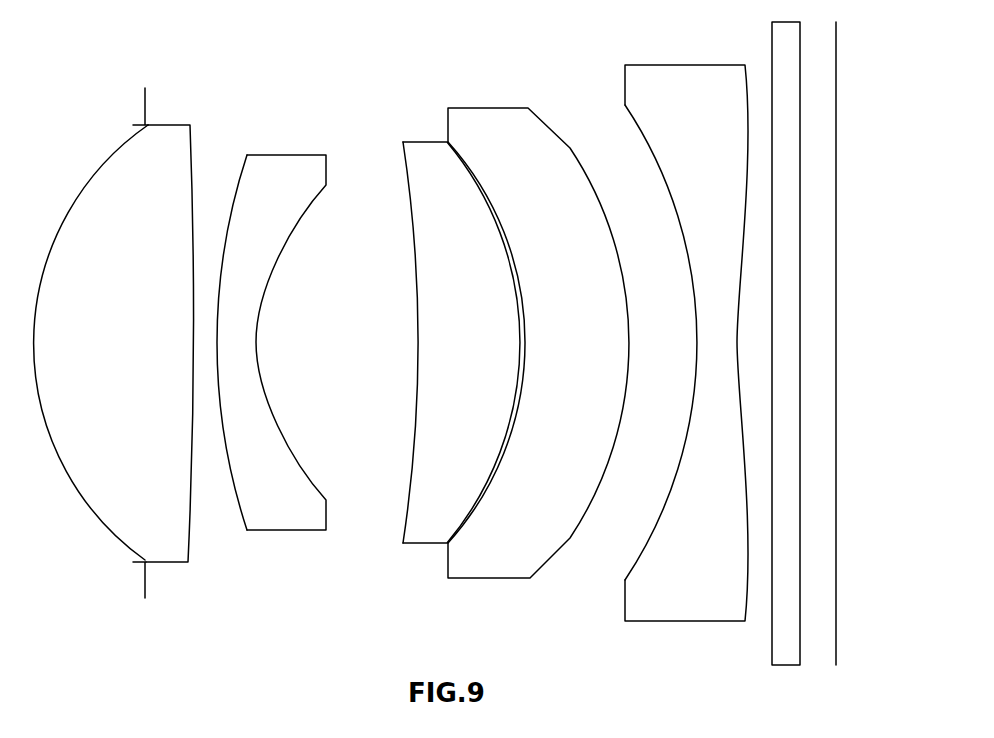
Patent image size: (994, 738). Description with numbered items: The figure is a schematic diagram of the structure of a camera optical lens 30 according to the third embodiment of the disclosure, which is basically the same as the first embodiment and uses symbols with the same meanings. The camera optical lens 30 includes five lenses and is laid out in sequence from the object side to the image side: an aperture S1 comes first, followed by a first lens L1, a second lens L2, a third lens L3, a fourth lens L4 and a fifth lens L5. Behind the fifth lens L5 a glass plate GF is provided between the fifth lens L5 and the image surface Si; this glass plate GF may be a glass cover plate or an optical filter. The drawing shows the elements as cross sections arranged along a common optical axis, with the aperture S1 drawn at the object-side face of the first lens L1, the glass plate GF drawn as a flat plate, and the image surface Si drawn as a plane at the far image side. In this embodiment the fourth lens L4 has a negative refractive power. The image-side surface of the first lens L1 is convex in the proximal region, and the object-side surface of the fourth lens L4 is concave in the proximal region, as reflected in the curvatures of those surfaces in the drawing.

The camera optical lens 30 is at (463, 37).
The aperture S1 is at (147, 331).
The first lens L1 is at (114, 331).
The second lens L2 is at (271, 331).
The third lens L3 is at (461, 330).
The fourth lens L4 is at (538, 330).
The fifth lens L5 is at (686, 329).
The glass plate GF is at (787, 332).
The image surface Si is at (836, 332).